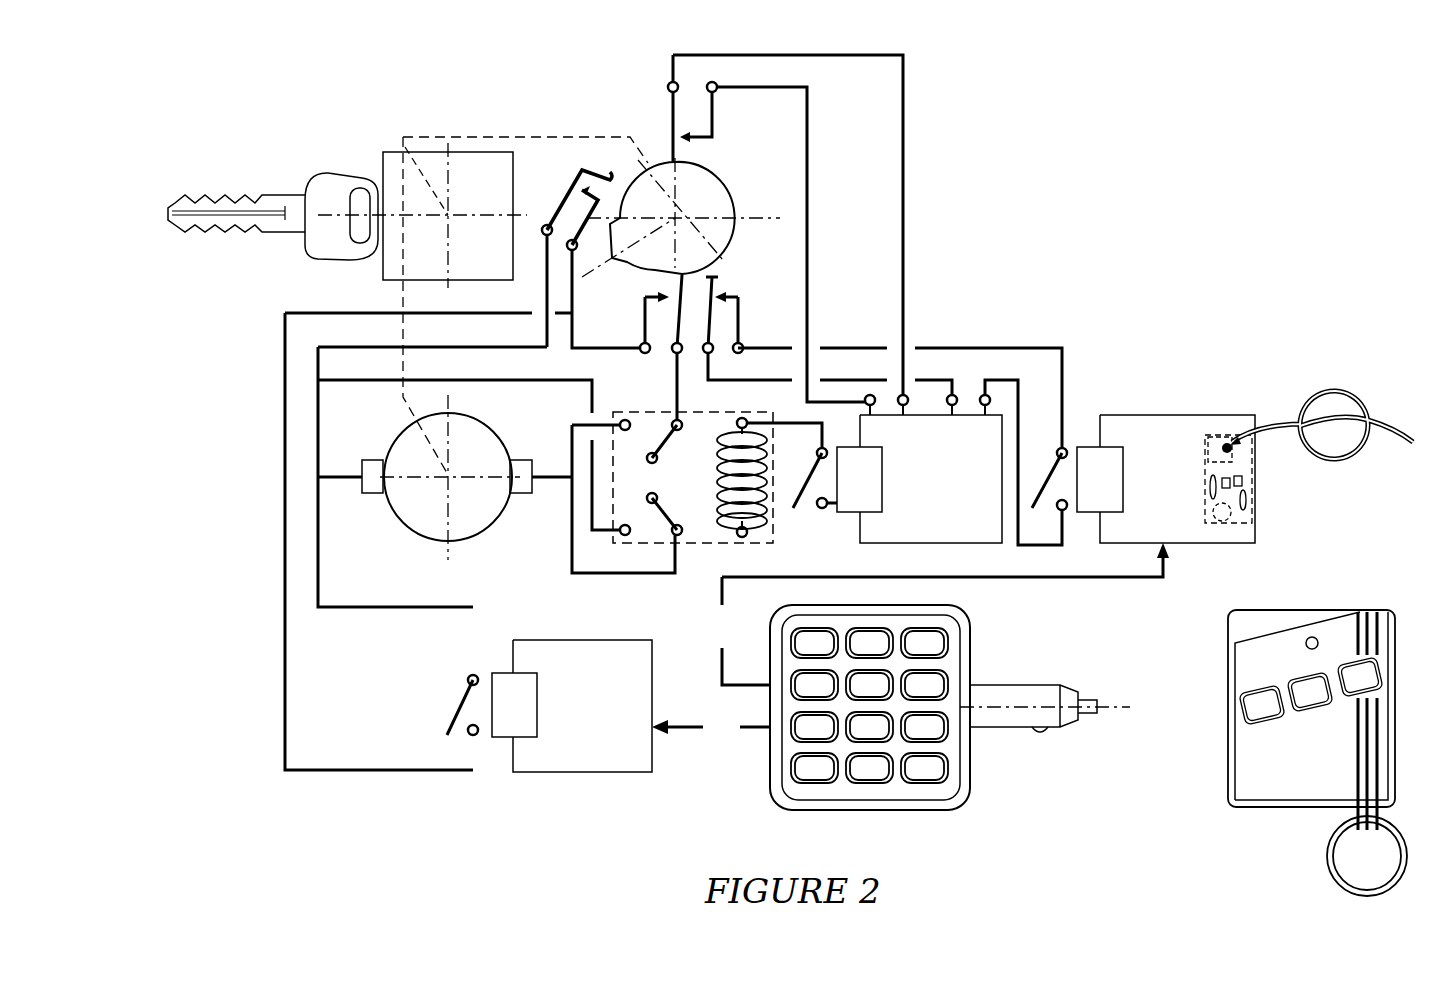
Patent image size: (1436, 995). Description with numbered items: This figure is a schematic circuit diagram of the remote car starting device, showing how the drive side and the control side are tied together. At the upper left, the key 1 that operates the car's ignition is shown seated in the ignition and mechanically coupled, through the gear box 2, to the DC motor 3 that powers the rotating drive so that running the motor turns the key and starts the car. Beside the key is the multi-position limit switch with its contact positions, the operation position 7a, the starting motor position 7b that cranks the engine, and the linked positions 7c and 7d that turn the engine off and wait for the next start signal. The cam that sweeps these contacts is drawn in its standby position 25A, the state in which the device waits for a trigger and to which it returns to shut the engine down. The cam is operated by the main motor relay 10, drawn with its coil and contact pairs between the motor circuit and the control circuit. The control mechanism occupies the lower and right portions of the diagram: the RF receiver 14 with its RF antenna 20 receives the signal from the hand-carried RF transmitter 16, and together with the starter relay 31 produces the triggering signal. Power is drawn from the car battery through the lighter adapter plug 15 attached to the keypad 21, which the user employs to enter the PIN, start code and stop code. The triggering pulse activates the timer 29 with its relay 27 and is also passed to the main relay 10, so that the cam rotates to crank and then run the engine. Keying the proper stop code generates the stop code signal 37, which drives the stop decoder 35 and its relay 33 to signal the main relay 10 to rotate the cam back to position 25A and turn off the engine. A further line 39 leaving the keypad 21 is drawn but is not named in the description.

The key 1 is at (328, 195).
The gear box 2 is at (417, 248).
The DC motor 3 is at (405, 445).
The operation position 7a is at (583, 170).
The starting motor contact position 7b is at (675, 157).
The engine-off contact position 7c is at (683, 278).
The engine-off contact position 7d is at (716, 288).
The cam standby position 25A is at (710, 205).
The main motor relay 10 is at (625, 505).
The RF receiver 14 is at (1177, 479).
The lighter adapter plug 15 is at (1067, 733).
The RF transmitter 16 is at (1262, 752).
The RF antenna 20 is at (1316, 487).
The keypad 21 is at (948, 667).
The relay 27 is at (859, 479).
The timer 29 is at (963, 462).
The starter relay 31 is at (1100, 479).
The relay 33 is at (492, 705).
The stop decoder 35 is at (582, 706).
The stop code signal 37 is at (711, 728).
The signal line 39 is at (937, 614).